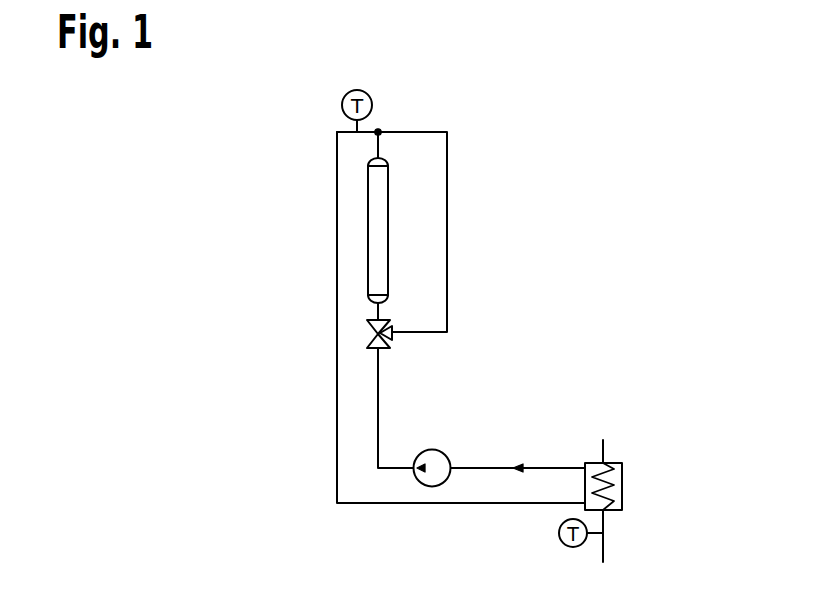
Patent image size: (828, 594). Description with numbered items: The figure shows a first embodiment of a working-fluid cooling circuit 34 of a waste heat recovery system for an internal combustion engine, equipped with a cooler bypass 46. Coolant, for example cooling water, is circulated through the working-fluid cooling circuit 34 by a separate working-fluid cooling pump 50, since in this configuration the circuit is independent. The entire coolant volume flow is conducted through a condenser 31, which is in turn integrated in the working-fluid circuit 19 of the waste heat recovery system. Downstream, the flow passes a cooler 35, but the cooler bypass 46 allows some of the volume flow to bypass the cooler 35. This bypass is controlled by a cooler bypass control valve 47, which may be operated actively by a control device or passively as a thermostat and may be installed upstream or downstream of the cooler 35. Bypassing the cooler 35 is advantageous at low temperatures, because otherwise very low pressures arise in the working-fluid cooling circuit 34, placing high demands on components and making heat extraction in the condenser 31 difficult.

The working-fluid circuit 19 is at (603, 548).
The condenser 31 is at (622, 485).
The working-fluid cooling circuit 34 is at (493, 503).
The cooler 35 is at (378, 229).
The cooler bypass 46 is at (447, 231).
The cooler bypass control valve 47 is at (386, 340).
The working-fluid cooling pump 50 is at (430, 478).